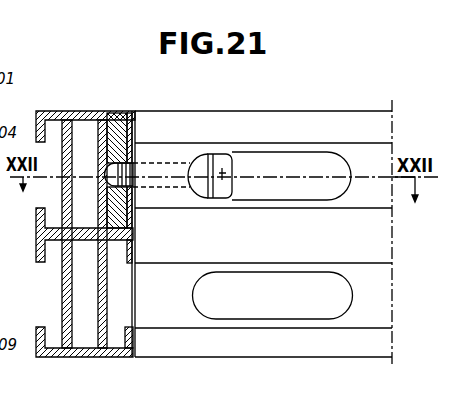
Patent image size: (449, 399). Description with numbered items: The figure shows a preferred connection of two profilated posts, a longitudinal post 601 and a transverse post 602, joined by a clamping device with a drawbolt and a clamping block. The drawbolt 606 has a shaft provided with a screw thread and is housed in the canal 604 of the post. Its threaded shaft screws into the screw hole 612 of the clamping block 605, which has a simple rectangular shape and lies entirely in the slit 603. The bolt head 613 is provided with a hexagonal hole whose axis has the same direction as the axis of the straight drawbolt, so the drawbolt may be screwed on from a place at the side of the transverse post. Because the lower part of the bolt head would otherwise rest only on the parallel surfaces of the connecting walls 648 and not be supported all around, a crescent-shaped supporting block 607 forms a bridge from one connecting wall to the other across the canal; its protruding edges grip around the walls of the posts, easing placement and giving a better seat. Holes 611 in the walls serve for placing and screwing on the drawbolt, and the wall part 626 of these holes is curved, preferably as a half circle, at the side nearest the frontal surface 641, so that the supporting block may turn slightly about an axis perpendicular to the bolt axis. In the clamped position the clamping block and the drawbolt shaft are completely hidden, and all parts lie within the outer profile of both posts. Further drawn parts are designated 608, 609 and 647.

The longitudinal post 601 is at (50, 110).
The transverse post 602 is at (350, 152).
The slit 603 is at (53, 332).
The canal 604 is at (82, 148).
The clamping block 605 is at (129, 113).
The drawbolt 606 is at (155, 170).
The supporting block 607 is at (200, 149).
The block 608 is at (115, 113).
The middle flange 609 is at (36, 220).
The holes in the walls 611 is at (263, 282).
The screw hole 612 is at (122, 160).
The bolt head 613 is at (229, 146).
The curved wall part of the holes 626 is at (194, 291).
The frontal surface 641 is at (133, 304).
The member 647 is at (8, 275).
The connecting wall 648 is at (103, 345).